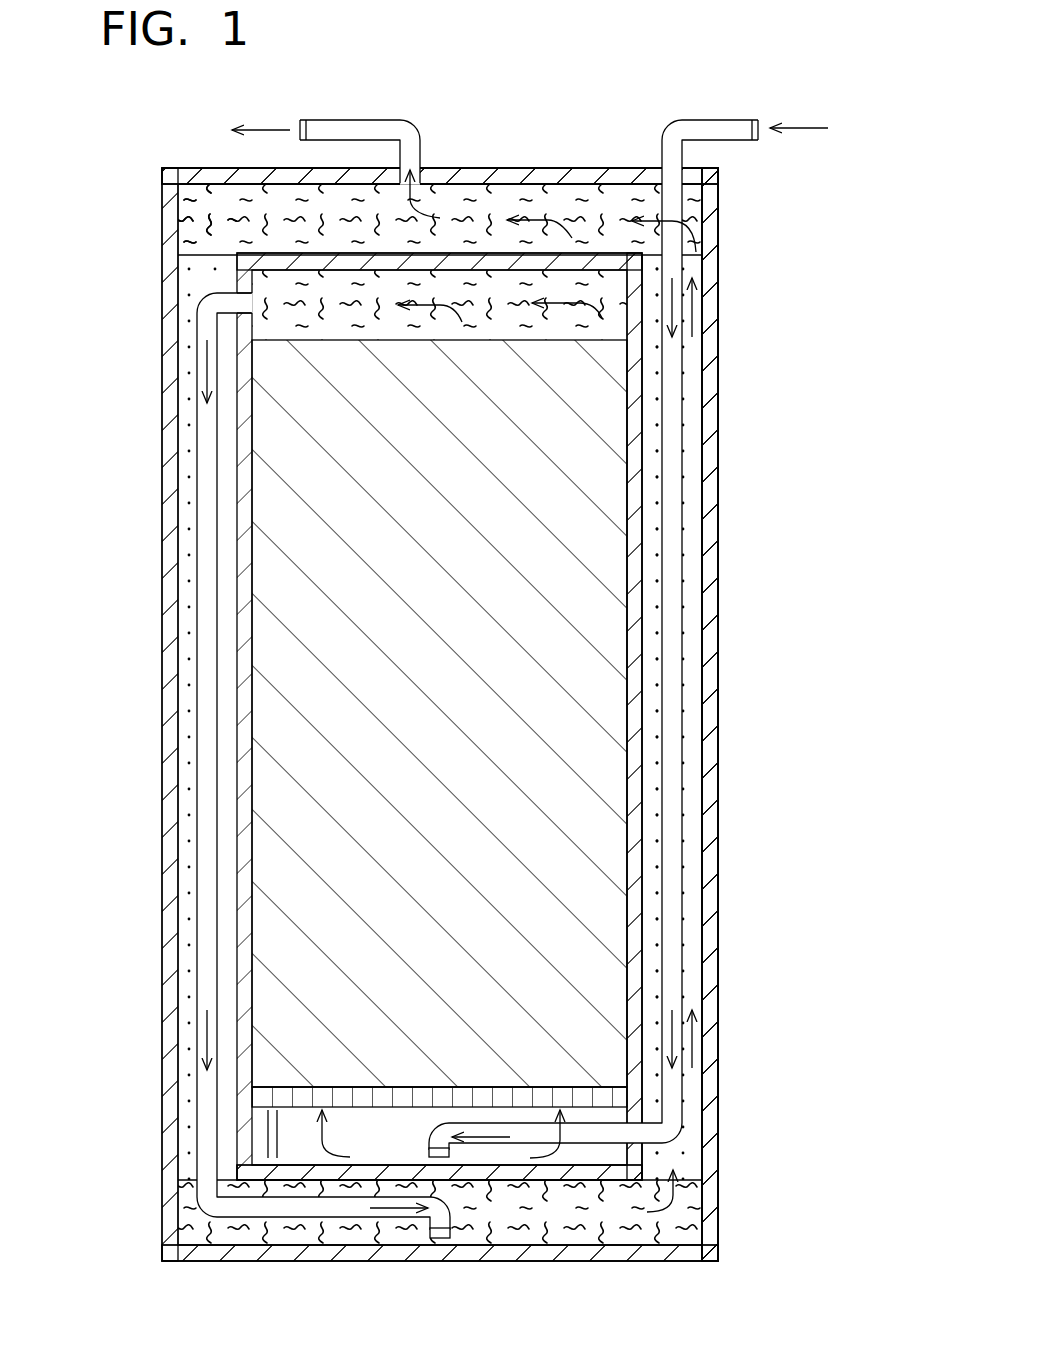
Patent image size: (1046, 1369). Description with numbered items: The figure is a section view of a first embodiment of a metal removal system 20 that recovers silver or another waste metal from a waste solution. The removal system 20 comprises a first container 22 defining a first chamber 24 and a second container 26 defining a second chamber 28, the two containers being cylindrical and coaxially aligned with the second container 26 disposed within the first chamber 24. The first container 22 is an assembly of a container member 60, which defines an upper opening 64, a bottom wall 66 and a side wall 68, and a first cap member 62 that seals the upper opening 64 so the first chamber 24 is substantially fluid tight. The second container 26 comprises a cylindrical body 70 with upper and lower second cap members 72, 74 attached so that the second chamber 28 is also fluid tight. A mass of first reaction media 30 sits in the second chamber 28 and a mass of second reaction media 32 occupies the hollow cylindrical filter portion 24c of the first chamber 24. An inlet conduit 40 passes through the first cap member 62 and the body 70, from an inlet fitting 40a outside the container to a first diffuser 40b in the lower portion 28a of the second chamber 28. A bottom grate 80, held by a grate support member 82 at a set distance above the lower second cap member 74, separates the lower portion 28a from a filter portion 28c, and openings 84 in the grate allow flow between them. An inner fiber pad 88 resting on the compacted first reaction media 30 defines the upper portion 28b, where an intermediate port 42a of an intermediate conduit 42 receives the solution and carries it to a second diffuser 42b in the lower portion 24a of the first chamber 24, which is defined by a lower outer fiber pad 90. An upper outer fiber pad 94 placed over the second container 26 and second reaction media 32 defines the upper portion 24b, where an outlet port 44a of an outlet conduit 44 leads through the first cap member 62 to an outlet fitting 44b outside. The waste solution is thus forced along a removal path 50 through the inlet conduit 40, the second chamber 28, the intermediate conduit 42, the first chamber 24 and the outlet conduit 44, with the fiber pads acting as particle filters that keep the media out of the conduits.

The removal system 20 is at (138, 317).
The first container 22 is at (724, 366).
The first chamber 24 is at (692, 420).
The lower portion of the first chamber 24a is at (570, 1255).
The upper portion of the first chamber 24b is at (190, 220).
The filter portion of the first chamber 24c is at (695, 452).
The second container 26 is at (646, 496).
The second chamber 28 is at (593, 527).
The lower portion of the second chamber 28a is at (377, 1145).
The upper portion of the second chamber 28b is at (553, 318).
The filter portion of the second chamber 28c is at (593, 562).
The first reaction media 30 is at (593, 605).
The second reaction media 32 is at (693, 617).
The inlet conduit 40 is at (672, 643).
The inlet fitting 40a is at (760, 120).
The first diffuser 40b is at (445, 1157).
The intermediate conduit 42 is at (670, 680).
The intermediate port 42a is at (257, 317).
The second diffuser 42b is at (440, 1238).
The outlet conduit 44 is at (372, 126).
The outlet port 44a is at (423, 196).
The outlet fitting 44b is at (303, 120).
The removal path 50 is at (817, 128).
The container member 60 is at (724, 726).
The first cap member 62 is at (230, 177).
The upper opening 64 is at (548, 186).
The bottom wall 66 is at (282, 1250).
The side wall 68 is at (708, 762).
The cylindrical body 70 is at (648, 798).
The upper second cap member 72 is at (575, 176).
The lower second cap member 74 is at (590, 1172).
The bottom grate 80 is at (332, 1078).
The grate support member 82 is at (262, 1140).
The openings 84 is at (400, 1090).
The inner fiber pad 88 is at (488, 322).
The lower outer fiber pad 90 is at (258, 1233).
The upper outer fiber pad 94 is at (233, 232).